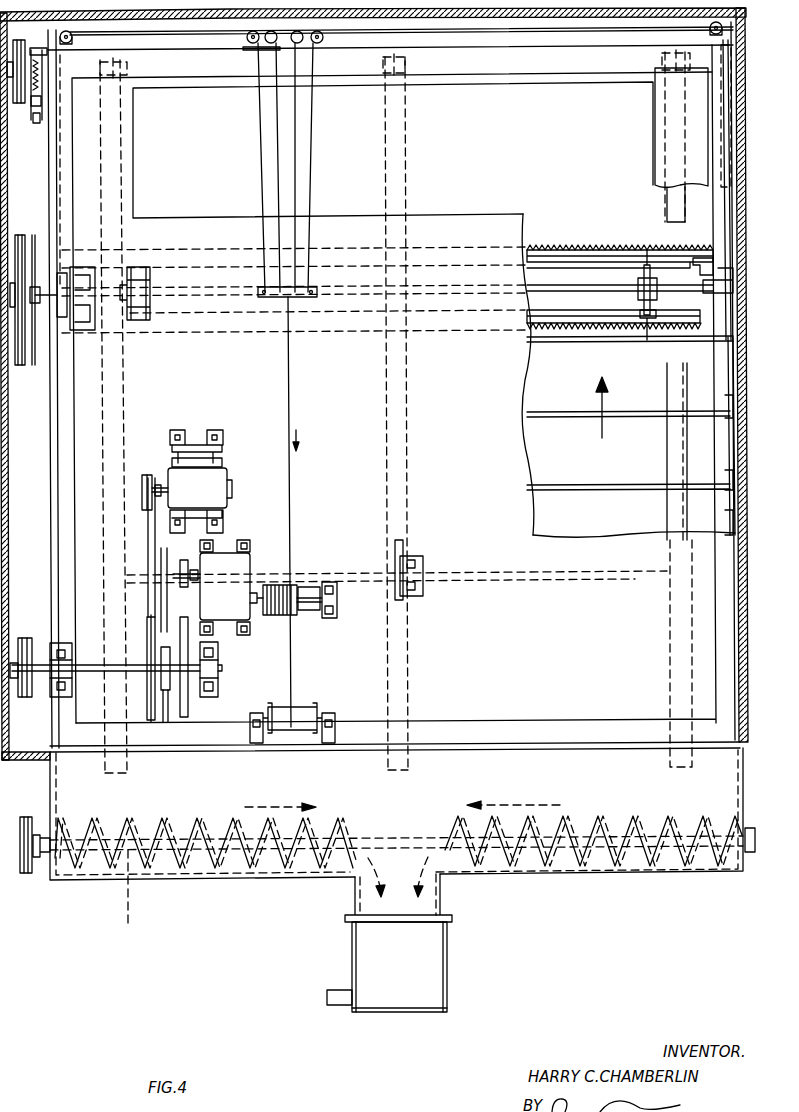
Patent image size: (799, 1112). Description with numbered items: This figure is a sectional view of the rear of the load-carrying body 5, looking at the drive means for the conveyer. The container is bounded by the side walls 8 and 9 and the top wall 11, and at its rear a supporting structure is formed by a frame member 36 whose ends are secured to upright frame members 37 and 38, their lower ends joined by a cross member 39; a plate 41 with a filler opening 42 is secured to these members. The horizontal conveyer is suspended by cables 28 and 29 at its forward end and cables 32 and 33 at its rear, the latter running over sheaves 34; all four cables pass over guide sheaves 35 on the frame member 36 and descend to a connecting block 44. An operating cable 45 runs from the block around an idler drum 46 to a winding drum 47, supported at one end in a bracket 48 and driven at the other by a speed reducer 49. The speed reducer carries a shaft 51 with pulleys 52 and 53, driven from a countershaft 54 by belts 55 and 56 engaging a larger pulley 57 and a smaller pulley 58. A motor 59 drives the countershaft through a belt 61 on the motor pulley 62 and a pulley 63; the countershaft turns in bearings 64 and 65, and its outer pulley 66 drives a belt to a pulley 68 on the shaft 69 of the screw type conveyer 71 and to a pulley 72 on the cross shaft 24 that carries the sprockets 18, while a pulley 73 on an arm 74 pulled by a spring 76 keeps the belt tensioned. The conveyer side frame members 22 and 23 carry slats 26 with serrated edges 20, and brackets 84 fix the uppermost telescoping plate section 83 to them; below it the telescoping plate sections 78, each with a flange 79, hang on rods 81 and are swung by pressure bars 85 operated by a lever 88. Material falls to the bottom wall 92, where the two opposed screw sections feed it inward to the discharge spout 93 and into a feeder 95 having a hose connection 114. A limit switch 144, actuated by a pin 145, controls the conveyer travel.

The load-carrying body 5 is at (741, 105).
The side wall 8 is at (9, 168).
The side wall 9 is at (746, 138).
The top wall 11 is at (178, 14).
The sprocket 18 is at (140, 273).
The serrated edge 20 is at (537, 247).
The side frame member 22 is at (105, 268).
The side frame member 23 is at (712, 263).
The cross shaft 24 is at (570, 275).
The slat 26 is at (592, 310).
The cable 28 is at (276, 142).
The cable 29 is at (299, 141).
The cable 32 is at (187, 37).
The cable 33 is at (312, 160).
The sheave 34 is at (73, 41).
The guide sheave 35 is at (247, 40).
The frame member 36 is at (453, 52).
The upright frame member 37 is at (65, 167).
The upright frame member 38 is at (715, 118).
The cross member 39 is at (600, 728).
The plate 41 is at (497, 405).
The filler opening 42 is at (480, 213).
The connecting block 44 is at (260, 300).
The operating cable 45 is at (293, 383).
The idler drum 46 is at (305, 715).
The winding drum 47 is at (312, 608).
The bracket 48 is at (338, 606).
The speed reducer 49 is at (241, 579).
The shaft 51 is at (186, 562).
The pulley 52 is at (196, 583).
The pulley 53 is at (160, 551).
The countershaft 54 is at (92, 664).
The belt 55 is at (189, 603).
The belt 56 is at (150, 630).
The pulley 57 is at (172, 711).
The pulley 58 is at (172, 724).
The motor 59 is at (215, 478).
The belt 61 is at (147, 517).
The motor pulley 62 is at (152, 475).
The pulley 63 is at (148, 724).
The bearing 64 is at (62, 697).
The bearing 65 is at (219, 680).
The pulley 66 is at (26, 638).
The pulley 68 is at (24, 880).
The shaft 69 is at (122, 902).
The screw type conveyer 71 is at (230, 830).
The pulley 72 is at (23, 318).
The pulley 73 is at (18, 93).
The arm 74 is at (35, 56).
The spring 76 is at (44, 66).
The telescoping plate section 78 is at (560, 458).
The flange 79 is at (548, 345).
The rod 81 is at (727, 389).
The uppermost telescoping plate section 83 is at (545, 373).
The bracket 84 is at (735, 286).
The pressure bar 85 is at (406, 152).
The lever 88 is at (410, 543).
The bottom wall 92 is at (262, 880).
The discharge spout 93 is at (443, 899).
The feeder 95 is at (433, 968).
The connection 114 is at (350, 990).
The limit switch 144 is at (26, 128).
The pin 145 is at (40, 118).